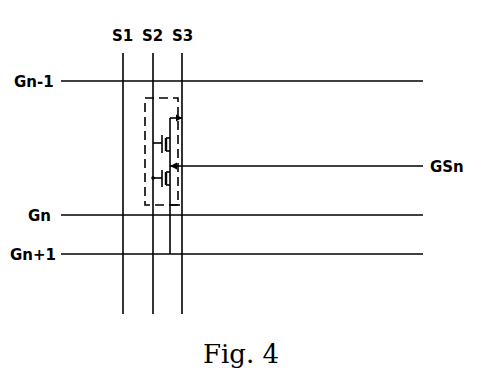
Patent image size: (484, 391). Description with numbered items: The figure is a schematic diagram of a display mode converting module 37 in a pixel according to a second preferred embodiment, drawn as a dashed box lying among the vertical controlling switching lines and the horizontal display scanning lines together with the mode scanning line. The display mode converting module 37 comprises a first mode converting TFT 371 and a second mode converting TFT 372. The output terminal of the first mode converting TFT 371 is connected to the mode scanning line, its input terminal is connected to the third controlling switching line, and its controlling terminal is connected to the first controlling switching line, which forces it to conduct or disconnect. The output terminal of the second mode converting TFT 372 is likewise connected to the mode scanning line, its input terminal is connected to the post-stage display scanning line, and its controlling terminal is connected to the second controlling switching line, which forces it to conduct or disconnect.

The display mode converting module 37 is at (226, 176).
The first mode converting TFT 371 is at (187, 145).
The second mode converting TFT 372 is at (186, 181).